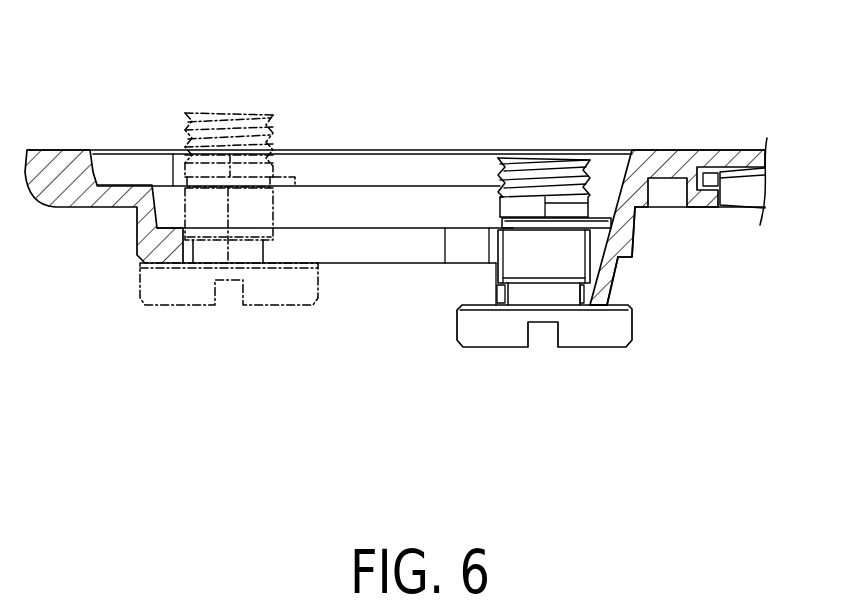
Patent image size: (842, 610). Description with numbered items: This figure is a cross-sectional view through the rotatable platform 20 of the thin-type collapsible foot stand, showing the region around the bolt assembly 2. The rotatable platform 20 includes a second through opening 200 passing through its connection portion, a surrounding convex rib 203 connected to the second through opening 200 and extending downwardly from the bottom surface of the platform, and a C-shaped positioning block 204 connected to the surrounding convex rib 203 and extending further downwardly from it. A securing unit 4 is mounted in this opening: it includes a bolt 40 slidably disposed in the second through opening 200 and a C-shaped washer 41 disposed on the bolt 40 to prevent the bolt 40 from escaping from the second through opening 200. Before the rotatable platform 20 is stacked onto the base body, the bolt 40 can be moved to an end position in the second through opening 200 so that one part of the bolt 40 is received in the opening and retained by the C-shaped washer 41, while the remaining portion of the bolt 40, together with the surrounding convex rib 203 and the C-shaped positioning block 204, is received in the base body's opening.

The heat dissipation assembly 2 is at (718, 52).
The rotatable platform 20 is at (673, 160).
The second through opening 200 is at (346, 170).
The surrounding convex rib 203 is at (628, 246).
The C-shaped positioning block 204 is at (602, 295).
The securing unit 4 is at (480, 418).
The bolt 40 is at (485, 330).
The C-shaped washer 41 is at (513, 222).